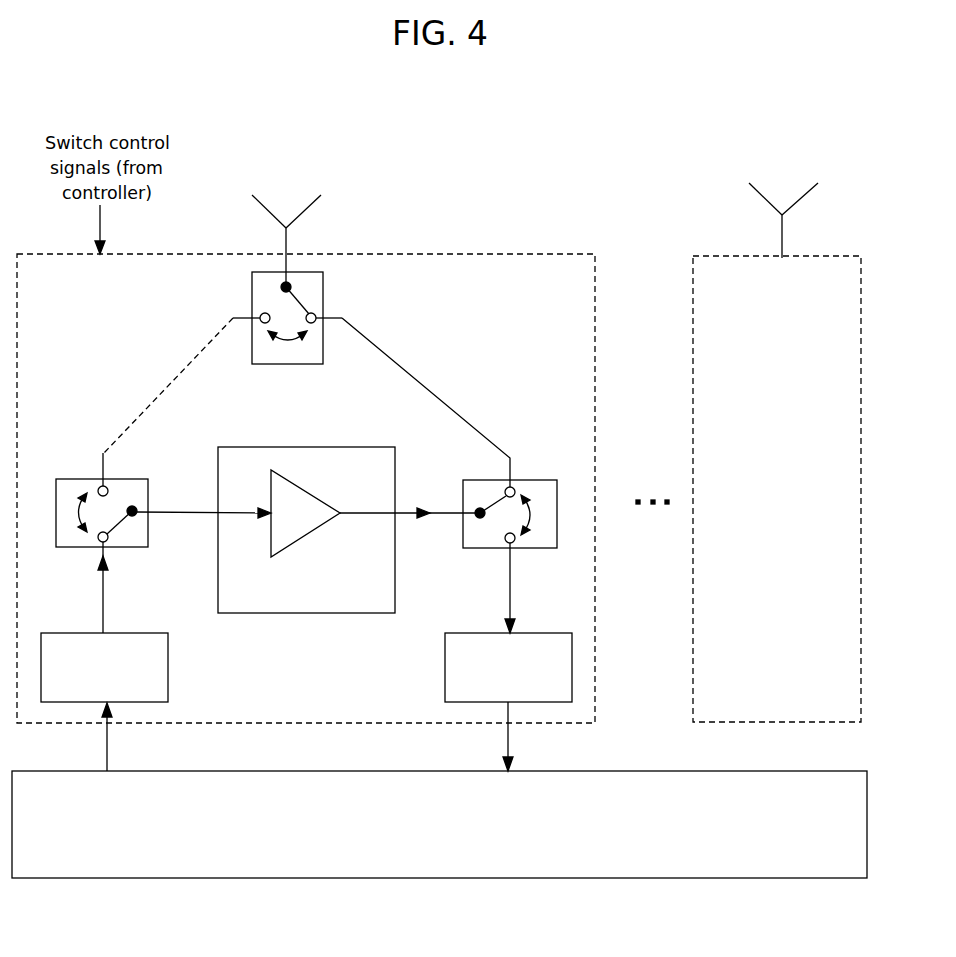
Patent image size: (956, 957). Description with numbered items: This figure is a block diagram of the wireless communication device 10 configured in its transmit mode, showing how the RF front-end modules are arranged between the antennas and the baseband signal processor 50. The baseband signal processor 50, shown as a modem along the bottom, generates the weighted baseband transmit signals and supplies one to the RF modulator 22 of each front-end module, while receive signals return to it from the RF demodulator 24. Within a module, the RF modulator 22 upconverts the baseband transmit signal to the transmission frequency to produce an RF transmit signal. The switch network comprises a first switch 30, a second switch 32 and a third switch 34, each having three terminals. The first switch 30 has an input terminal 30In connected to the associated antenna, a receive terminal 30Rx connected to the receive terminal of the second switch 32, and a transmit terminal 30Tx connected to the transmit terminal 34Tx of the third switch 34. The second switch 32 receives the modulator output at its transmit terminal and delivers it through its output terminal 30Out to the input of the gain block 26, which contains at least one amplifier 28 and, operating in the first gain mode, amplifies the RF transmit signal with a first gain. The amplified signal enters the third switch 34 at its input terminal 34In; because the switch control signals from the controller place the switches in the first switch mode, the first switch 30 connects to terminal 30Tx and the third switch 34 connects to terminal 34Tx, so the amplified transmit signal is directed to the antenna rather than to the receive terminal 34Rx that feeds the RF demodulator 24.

The wireless communication device 10 is at (501, 201).
The RF modulator 22 is at (168, 668).
The RF demodulator 24 is at (445, 667).
The gain block 26 is at (297, 447).
The amplifier 28 is at (307, 495).
The first switch 30 is at (269, 364).
The input terminal 30In is at (291, 285).
The receive terminal 30Rx is at (157, 397).
The transmit terminal 30Tx is at (208, 435).
The output terminal 30Out is at (136, 515).
The second switch 32 is at (150, 493).
The third switch 34 is at (463, 532).
The input terminal 34In is at (473, 506).
The transmit terminal 34Tx is at (532, 479).
The receive terminal 34Rx is at (533, 557).
The baseband signal processor 50 is at (72, 879).